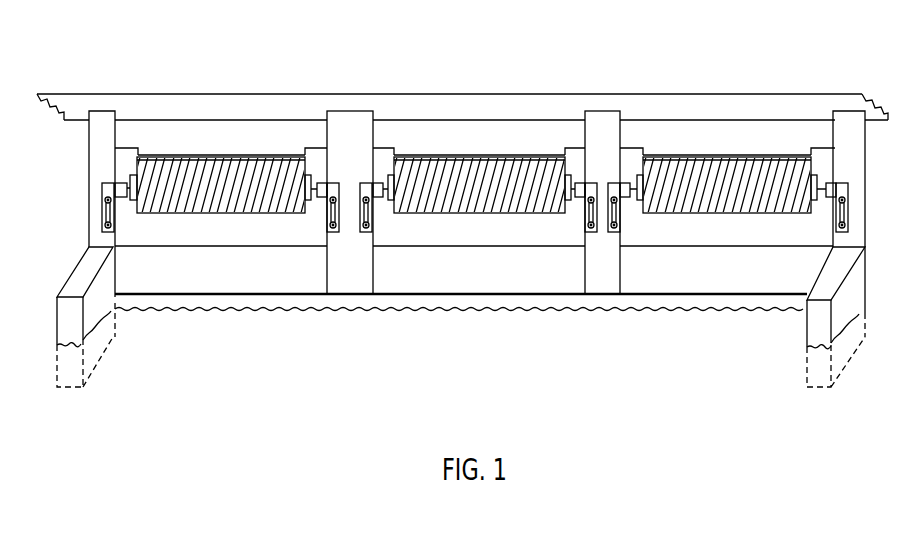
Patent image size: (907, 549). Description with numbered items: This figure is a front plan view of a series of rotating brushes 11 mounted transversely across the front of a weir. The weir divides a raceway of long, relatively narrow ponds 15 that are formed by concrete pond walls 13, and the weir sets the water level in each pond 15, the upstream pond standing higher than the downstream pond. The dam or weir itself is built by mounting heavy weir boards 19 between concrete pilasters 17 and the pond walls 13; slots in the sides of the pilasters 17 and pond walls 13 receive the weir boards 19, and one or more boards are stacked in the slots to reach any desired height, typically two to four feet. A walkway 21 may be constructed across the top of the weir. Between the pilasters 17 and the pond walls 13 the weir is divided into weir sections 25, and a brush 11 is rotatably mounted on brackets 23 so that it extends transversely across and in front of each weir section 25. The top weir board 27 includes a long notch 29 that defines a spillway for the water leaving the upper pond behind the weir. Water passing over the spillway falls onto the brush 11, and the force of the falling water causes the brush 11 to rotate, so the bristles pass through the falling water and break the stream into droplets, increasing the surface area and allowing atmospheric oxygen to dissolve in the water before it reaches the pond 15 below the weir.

The rotating brush 11 is at (249, 171).
The concrete pond wall 13 is at (100, 141).
The pond 15 is at (548, 313).
The concrete pilaster 17 is at (352, 118).
The weir board 19 is at (227, 286).
The walkway 21 is at (72, 94).
The bracket 23 is at (102, 191).
The weir section 25 is at (209, 139).
The top weir board 27 is at (126, 147).
The notch 29 is at (164, 153).